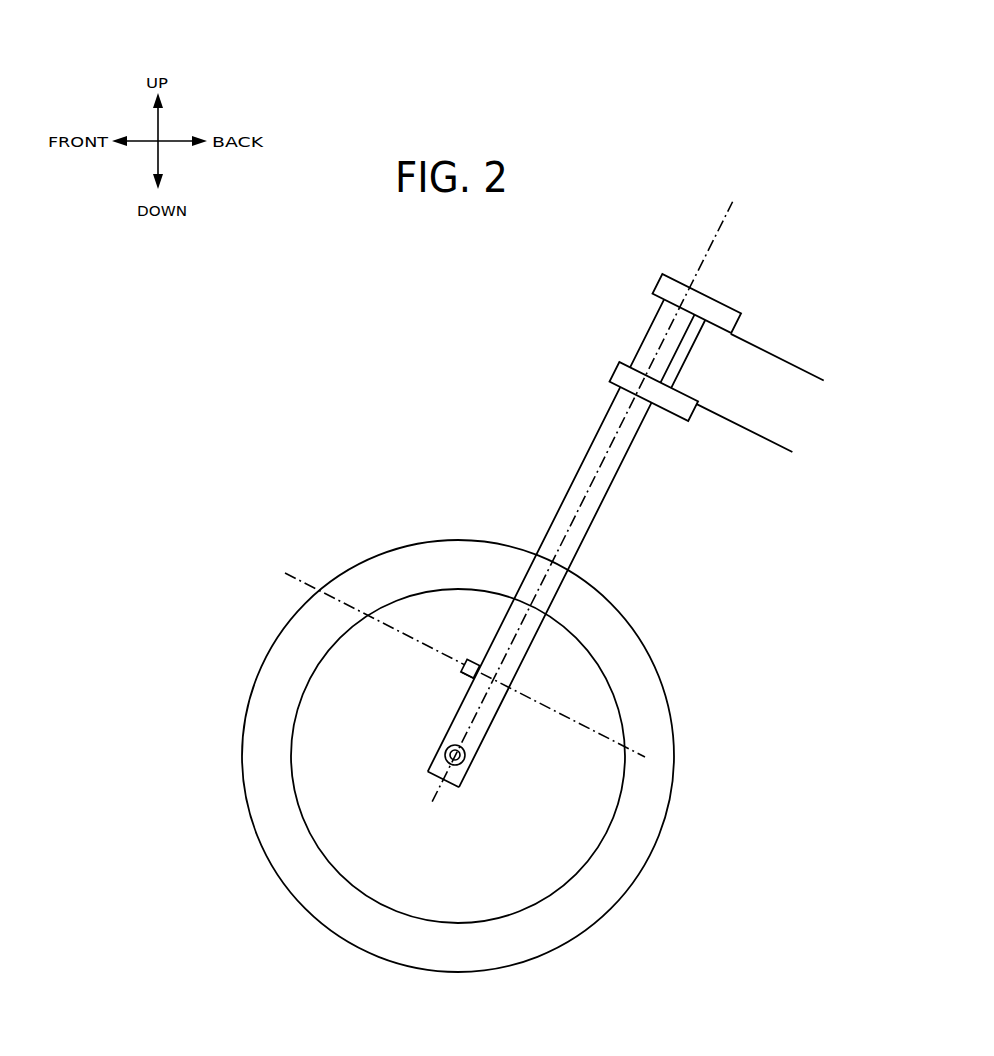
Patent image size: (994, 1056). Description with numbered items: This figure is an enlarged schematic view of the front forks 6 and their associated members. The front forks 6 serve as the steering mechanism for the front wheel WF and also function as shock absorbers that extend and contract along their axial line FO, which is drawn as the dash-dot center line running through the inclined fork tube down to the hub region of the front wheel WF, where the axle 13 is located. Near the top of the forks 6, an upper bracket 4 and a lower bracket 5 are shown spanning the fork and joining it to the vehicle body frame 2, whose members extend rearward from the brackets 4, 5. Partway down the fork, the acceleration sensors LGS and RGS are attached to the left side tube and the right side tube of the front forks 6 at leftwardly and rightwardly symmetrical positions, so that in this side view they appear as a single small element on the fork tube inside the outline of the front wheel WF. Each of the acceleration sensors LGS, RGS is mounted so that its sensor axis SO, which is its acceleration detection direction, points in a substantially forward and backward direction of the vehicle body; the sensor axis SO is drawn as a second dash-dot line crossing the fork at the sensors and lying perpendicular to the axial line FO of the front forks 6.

The vehicle body frame 2 is at (797, 362).
The upper bracket 4 is at (658, 278).
The lower bracket 5 is at (618, 366).
The front forks 6 is at (585, 445).
The front wheel axle 13 is at (444, 752).
The axial line FO is at (728, 213).
The sensor axis SO is at (294, 577).
The acceleration sensor LGS is at (470, 650).
The acceleration sensor RGS is at (467, 675).
The front wheel WF is at (328, 908).